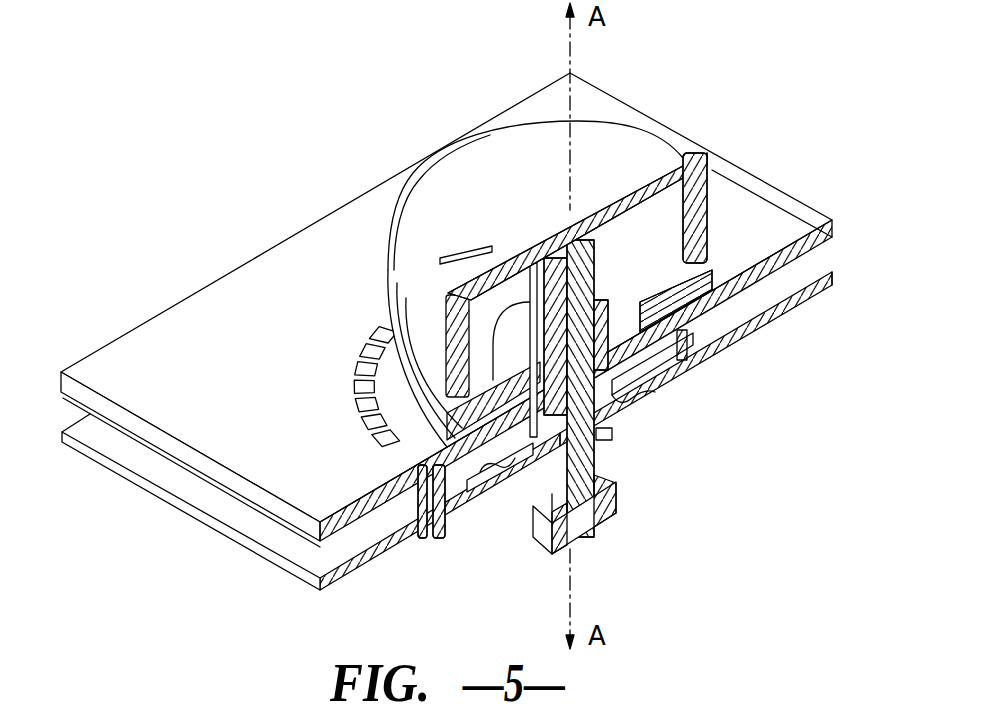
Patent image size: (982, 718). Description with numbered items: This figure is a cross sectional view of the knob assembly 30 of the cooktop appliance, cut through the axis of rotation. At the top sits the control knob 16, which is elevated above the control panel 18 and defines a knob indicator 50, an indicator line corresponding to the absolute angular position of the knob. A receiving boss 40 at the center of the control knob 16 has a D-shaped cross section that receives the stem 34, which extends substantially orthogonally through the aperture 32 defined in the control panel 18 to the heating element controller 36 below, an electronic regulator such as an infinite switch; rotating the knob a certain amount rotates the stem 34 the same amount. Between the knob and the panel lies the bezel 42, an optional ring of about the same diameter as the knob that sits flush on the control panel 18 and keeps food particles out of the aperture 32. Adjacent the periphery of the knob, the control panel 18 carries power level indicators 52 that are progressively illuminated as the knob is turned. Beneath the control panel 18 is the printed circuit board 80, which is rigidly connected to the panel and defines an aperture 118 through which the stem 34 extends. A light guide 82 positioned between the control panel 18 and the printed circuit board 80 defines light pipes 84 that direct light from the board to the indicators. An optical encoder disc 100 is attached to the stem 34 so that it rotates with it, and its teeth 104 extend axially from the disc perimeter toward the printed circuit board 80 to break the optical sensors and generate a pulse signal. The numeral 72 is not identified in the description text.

The knob assembly 30 is at (464, 333).
The control knob 16 is at (483, 157).
The control panel 18 is at (602, 103).
The receiving boss 40 is at (600, 205).
The aperture 32 is at (621, 298).
The knob indicator 50 is at (463, 247).
The lower plate 72 is at (776, 292).
The power level indicators 52 is at (360, 348).
The bezel 42 is at (402, 396).
The teeth 104 is at (690, 337).
The aperture 118 is at (612, 434).
The stem 34 is at (581, 447).
The heating element controller 36 is at (619, 497).
The optical encoder disc 100 is at (495, 470).
The printed circuit board 80 is at (170, 472).
The light guide 82 is at (410, 502).
The light pipe 84 is at (434, 545).